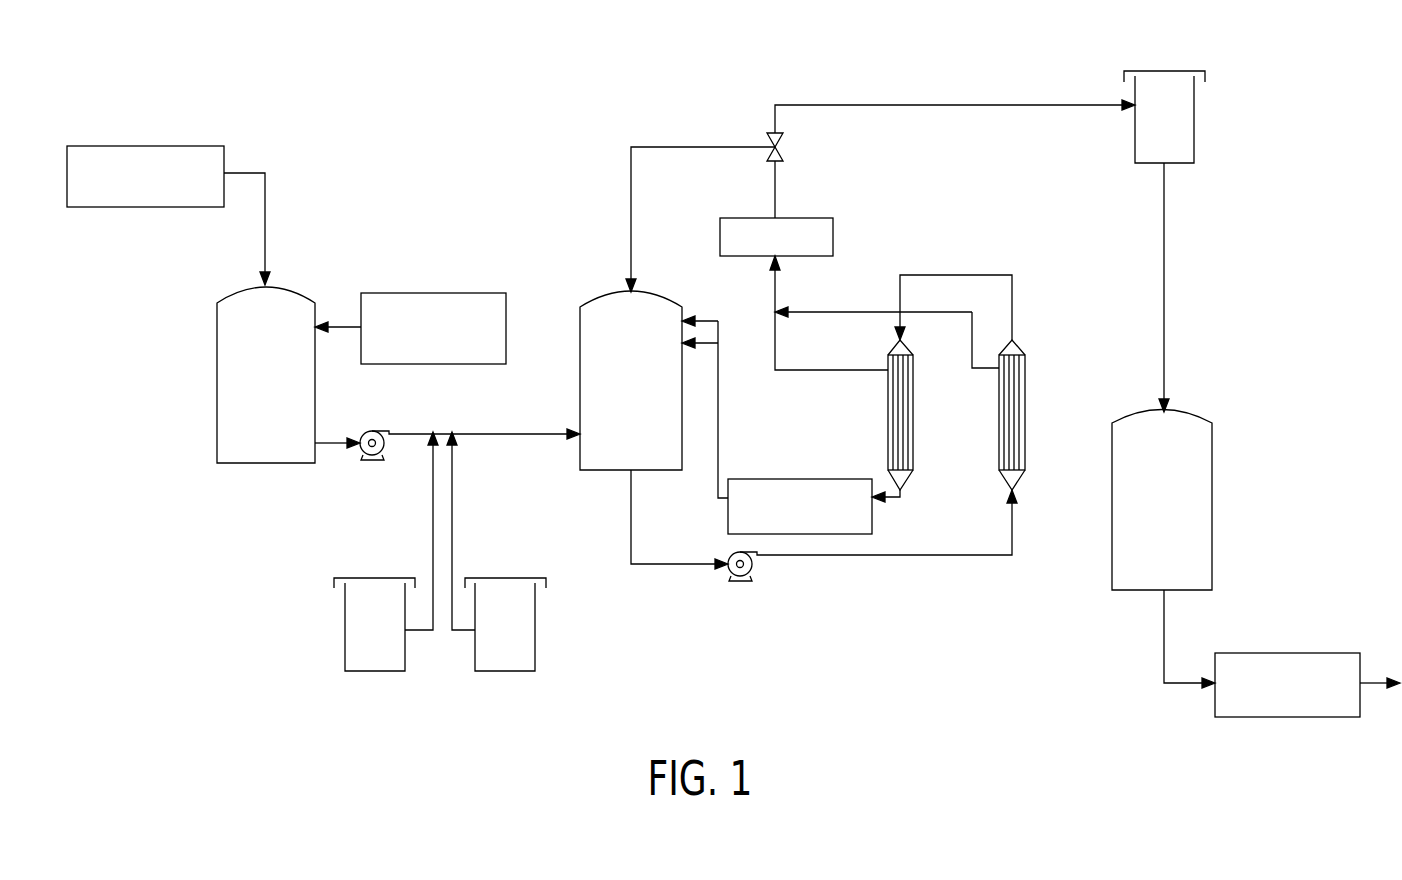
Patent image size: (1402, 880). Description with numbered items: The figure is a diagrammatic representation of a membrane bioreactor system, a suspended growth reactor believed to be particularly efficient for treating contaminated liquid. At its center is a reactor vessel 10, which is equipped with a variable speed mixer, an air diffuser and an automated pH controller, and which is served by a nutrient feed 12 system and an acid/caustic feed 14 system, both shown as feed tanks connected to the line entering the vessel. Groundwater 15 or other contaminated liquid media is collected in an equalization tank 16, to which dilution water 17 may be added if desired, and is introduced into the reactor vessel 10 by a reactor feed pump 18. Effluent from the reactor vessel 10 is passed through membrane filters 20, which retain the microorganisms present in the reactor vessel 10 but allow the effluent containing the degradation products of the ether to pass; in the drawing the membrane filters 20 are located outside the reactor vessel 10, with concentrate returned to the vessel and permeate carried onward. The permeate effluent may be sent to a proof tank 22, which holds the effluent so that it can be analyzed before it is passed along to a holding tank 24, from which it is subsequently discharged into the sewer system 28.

The reactor vessel 10 is at (595, 421).
The nutrient feed system 12 is at (356, 621).
The acid/caustic feed system 14 is at (520, 620).
The groundwater 15 is at (163, 207).
The equalization tank 16 is at (281, 452).
The dilution water 17 is at (455, 352).
The reactor feed pump 18 is at (373, 433).
The membrane filters 20 is at (913, 375).
The proof tank 22 is at (1168, 117).
The holding tank 24 is at (1203, 525).
The sewer system 28 is at (1255, 655).